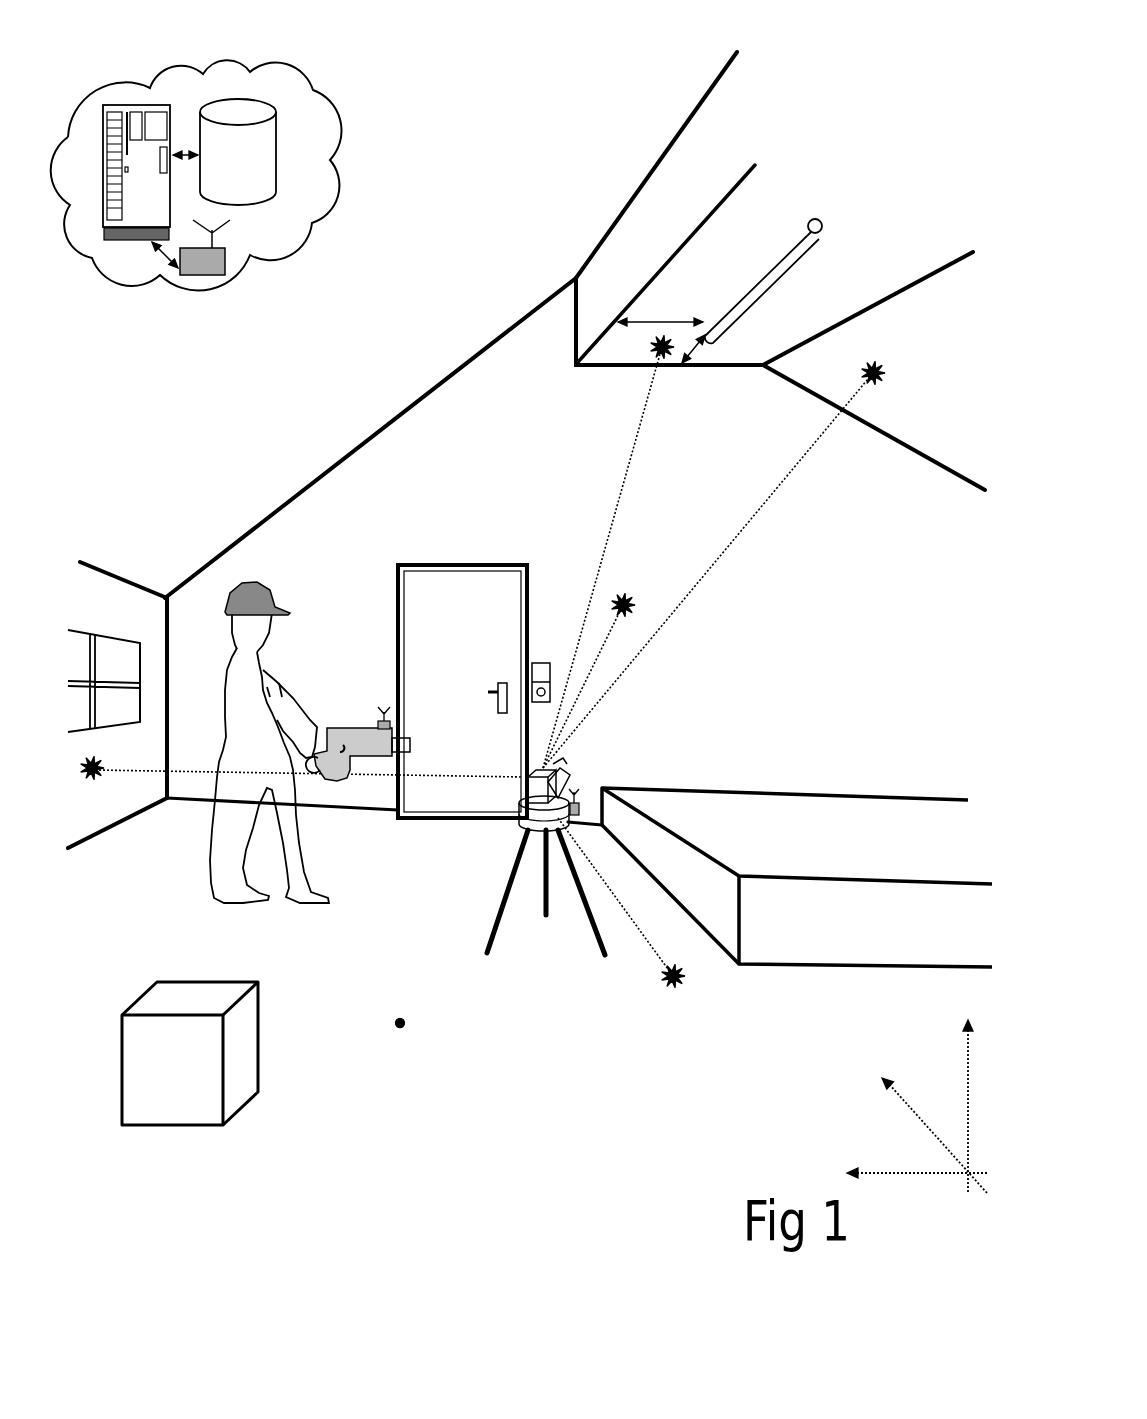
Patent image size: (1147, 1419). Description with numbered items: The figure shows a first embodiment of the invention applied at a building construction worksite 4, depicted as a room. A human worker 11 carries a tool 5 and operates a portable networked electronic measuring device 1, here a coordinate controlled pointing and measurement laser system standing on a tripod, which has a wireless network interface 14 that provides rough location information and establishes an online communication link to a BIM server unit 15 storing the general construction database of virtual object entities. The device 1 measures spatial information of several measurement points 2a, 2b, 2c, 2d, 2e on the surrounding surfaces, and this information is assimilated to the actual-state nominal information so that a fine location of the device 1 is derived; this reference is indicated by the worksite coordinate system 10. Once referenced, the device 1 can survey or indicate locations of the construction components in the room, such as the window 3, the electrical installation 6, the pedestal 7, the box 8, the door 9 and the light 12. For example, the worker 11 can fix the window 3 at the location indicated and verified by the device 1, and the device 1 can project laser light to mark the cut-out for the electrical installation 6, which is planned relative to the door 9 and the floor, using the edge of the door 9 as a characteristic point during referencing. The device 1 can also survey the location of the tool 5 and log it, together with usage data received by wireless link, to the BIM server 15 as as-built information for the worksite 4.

The portable networked electronic measuring device 1 is at (553, 828).
The measurement point 2a is at (866, 378).
The measurement point 2b is at (655, 351).
The measurement point 2c is at (620, 600).
The measurement point 2d is at (680, 984).
The measurement point 2e is at (95, 776).
The window 3 is at (87, 638).
The worksite 4 is at (403, 1026).
The tool 5 is at (333, 740).
The electrical installation 6 is at (535, 665).
The pedestal 7 is at (748, 867).
The box 8 is at (197, 1113).
The door 9 is at (473, 572).
The worksite coordinate system 10 is at (960, 1168).
The human worker 11 is at (272, 667).
The light 12 is at (753, 277).
The wireless network interface 14 is at (578, 802).
The BIM server unit 15 is at (150, 273).